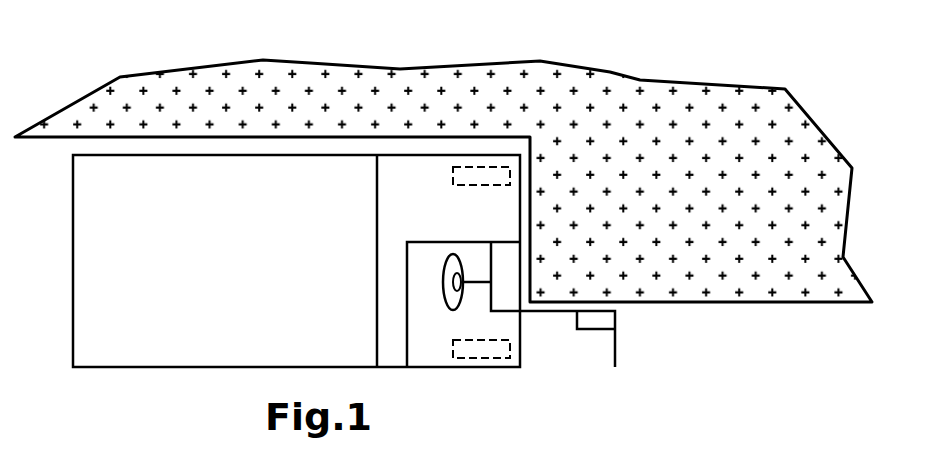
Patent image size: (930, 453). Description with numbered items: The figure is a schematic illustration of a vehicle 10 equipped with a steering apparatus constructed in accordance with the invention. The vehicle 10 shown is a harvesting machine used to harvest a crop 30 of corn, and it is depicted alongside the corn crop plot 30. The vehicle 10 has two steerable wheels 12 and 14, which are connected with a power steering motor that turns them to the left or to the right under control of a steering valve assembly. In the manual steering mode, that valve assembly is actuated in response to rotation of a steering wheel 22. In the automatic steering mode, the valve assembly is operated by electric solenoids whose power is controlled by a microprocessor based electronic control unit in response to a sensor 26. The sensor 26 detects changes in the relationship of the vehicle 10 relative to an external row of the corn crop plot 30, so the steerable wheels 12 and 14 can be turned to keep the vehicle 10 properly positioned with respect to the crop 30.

The vehicle 10 is at (182, 382).
The steerable wheel 12 is at (465, 172).
The steerable wheel 14 is at (481, 343).
The steering wheel 22 is at (443, 279).
The sensor 26 is at (603, 320).
The crop 30 is at (590, 110).